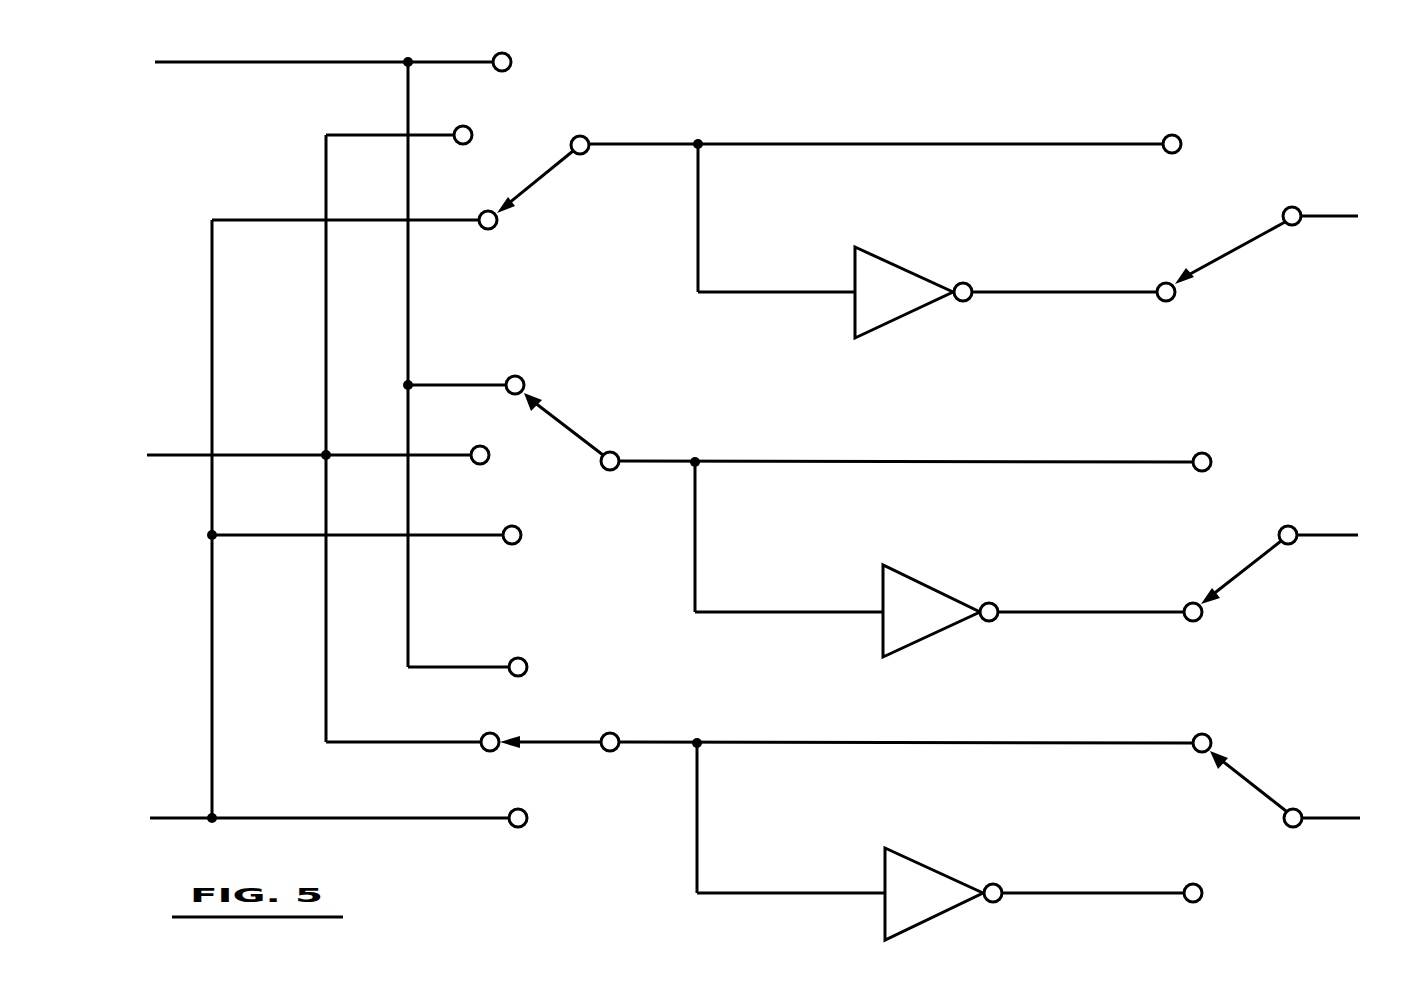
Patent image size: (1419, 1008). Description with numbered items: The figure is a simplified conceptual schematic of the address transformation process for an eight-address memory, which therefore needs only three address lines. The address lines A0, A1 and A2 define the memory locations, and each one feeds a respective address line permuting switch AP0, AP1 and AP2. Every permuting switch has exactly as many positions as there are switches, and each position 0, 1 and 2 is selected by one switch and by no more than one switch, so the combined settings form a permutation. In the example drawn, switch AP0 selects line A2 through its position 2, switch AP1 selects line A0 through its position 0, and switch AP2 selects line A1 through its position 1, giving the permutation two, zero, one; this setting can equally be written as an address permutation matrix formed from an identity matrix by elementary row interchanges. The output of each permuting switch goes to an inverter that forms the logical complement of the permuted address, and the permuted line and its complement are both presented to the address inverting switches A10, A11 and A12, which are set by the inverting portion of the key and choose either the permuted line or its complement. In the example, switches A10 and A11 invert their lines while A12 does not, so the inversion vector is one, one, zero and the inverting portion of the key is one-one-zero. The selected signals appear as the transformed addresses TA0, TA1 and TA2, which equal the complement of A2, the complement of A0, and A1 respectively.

The switch position 0 is at (519, 359).
The switch position 1 is at (474, 422).
The switch position 2 is at (494, 502).
The address line A0 is at (308, 359).
The address line A1 is at (291, 438).
The address line A2 is at (307, 524).
The address line permuting switch AP0 is at (546, 156).
The address line permuting switch AP1 is at (576, 431).
The address line permuting switch AP2 is at (563, 718).
The address inverting switch A10 is at (909, 235).
The address inverting switch A11 is at (945, 550).
The address inverting switch A12 is at (938, 831).
The transformed address TA0 is at (1293, 244).
The transformed address TA1 is at (1306, 565).
The transformed address TA2 is at (1311, 790).